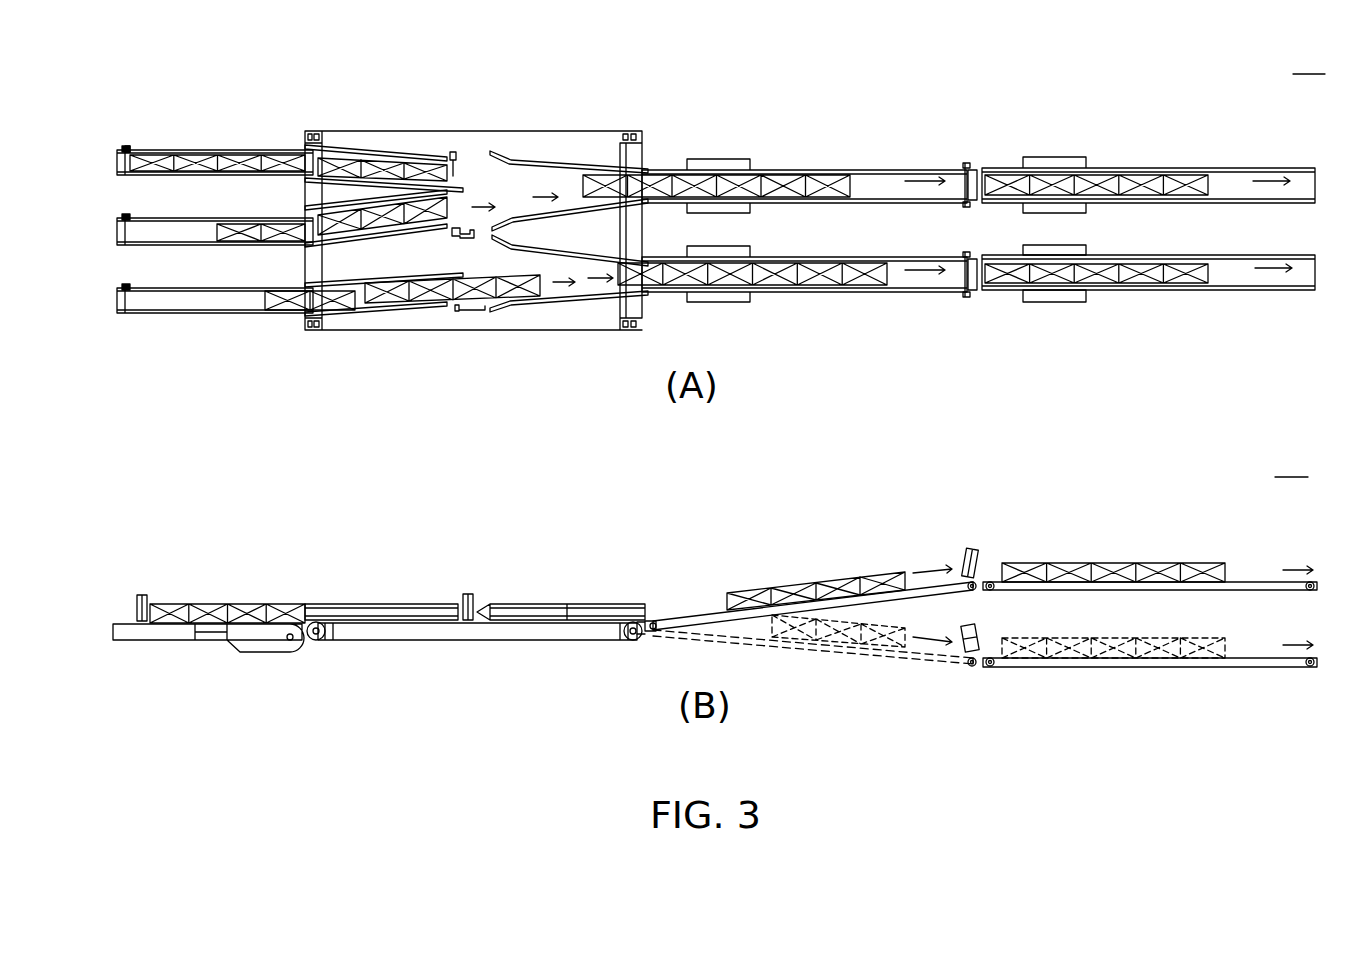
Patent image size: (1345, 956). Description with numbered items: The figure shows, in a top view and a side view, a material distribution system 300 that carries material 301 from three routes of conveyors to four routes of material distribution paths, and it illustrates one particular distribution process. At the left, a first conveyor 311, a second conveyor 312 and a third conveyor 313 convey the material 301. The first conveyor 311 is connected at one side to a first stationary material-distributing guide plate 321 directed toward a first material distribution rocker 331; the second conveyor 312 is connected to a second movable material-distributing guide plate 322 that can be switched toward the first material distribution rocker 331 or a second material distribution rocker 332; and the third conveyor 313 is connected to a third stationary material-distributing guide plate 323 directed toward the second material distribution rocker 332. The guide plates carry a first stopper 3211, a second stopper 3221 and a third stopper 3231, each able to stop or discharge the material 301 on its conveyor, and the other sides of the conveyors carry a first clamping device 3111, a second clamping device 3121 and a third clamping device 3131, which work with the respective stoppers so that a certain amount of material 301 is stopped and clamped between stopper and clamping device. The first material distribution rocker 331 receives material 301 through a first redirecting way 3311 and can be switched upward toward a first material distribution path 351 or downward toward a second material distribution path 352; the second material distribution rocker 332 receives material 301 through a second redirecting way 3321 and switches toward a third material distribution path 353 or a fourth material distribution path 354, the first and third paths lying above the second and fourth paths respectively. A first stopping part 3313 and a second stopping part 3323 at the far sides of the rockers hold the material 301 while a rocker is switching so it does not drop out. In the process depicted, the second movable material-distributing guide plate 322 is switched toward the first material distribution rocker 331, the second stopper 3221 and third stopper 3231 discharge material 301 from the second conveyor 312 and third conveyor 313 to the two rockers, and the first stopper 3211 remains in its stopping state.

The material distribution system 300 is at (1301, 265).
The material 301 is at (282, 160).
The first conveyor 311 is at (207, 152).
The second conveyor 312 is at (208, 225).
The third conveyor 313 is at (207, 292).
The first clamping device 3111 is at (127, 147).
The second clamping device 3121 is at (126, 216).
The third clamping device 3131 is at (126, 285).
The first stationary material-distributing guide plate 321 is at (388, 156).
The second movable material-distributing guide plate 322 is at (395, 225).
The third stationary material-distributing guide plate 323 is at (392, 310).
The first stopper 3211 is at (453, 150).
The second stopper 3221 is at (462, 232).
The third stopper 3231 is at (465, 312).
The first redirecting way 3311 is at (570, 163).
The second redirecting way 3321 is at (580, 300).
The first material distribution rocker 331 is at (900, 178).
The second material distribution rocker 332 is at (900, 262).
The first stopping part 3313 is at (966, 165).
The second stopping part 3323 is at (966, 298).
The first material distribution path 351 is at (1255, 158).
The second material distribution path 352 is at (1255, 674).
The third material distribution path 353 is at (1258, 298).
The fourth material distribution path 354 is at (1054, 273).